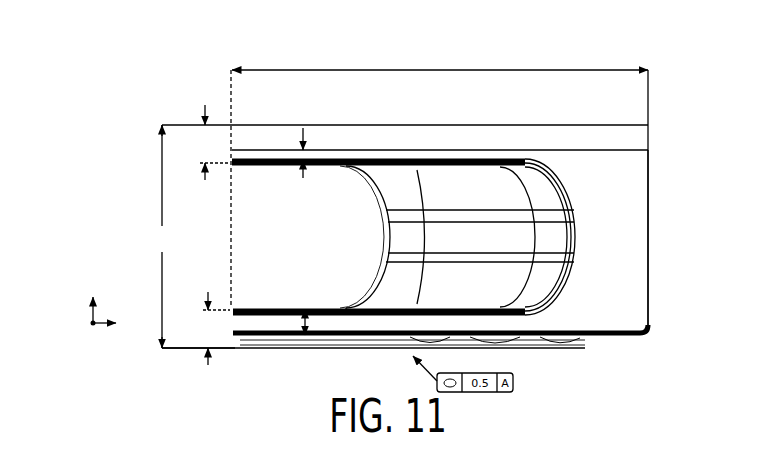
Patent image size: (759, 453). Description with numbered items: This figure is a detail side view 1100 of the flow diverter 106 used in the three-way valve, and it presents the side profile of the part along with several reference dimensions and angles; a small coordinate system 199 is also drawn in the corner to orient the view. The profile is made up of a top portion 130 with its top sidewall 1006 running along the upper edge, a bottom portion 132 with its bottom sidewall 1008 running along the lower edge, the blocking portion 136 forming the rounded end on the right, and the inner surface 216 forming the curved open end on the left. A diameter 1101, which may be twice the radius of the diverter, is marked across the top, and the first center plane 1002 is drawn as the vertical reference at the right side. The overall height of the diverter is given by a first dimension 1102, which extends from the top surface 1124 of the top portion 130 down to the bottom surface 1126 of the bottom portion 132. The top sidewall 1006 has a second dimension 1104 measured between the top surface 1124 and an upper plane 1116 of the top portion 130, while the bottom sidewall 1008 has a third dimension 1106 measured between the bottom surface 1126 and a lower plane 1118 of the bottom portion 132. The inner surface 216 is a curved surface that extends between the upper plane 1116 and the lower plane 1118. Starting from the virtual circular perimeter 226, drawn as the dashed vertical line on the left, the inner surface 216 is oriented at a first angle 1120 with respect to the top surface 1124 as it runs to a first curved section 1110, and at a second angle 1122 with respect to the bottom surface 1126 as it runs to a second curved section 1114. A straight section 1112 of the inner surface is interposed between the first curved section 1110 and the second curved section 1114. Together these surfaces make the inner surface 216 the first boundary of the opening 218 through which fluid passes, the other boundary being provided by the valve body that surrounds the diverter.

The detail side view 1100 is at (681, 88).
The flow diverter 106 is at (566, 112).
The top portion 130 is at (440, 138).
The blocking portion 136 is at (573, 190).
The first center plane 1002 is at (651, 256).
The top sidewall 1006 is at (243, 130).
The bottom sidewall 1008 is at (278, 323).
The top surface 1124 is at (160, 123).
The bottom surface 1126 is at (162, 349).
The upper plane 1116 is at (262, 158).
The lower plane 1118 is at (291, 316).
The opening 218 is at (270, 197).
The inner surface 216 is at (355, 204).
The virtual circular perimeter 226 is at (229, 232).
The first curved section 1110 is at (377, 196).
The straight section 1112 is at (388, 238).
The second curved section 1114 is at (370, 298).
The bottom portion 132 is at (412, 331).
The diameter 1101 is at (440, 61).
The first dimension 1102 is at (161, 236).
The second dimension 1104 is at (201, 142).
The third dimension 1106 is at (203, 328).
The first angle 1120 is at (323, 136).
The second angle 1122 is at (288, 306).
The coordinate system 199 is at (70, 290).